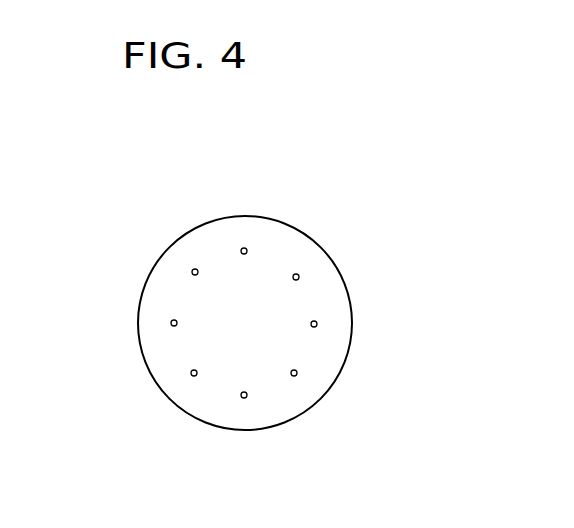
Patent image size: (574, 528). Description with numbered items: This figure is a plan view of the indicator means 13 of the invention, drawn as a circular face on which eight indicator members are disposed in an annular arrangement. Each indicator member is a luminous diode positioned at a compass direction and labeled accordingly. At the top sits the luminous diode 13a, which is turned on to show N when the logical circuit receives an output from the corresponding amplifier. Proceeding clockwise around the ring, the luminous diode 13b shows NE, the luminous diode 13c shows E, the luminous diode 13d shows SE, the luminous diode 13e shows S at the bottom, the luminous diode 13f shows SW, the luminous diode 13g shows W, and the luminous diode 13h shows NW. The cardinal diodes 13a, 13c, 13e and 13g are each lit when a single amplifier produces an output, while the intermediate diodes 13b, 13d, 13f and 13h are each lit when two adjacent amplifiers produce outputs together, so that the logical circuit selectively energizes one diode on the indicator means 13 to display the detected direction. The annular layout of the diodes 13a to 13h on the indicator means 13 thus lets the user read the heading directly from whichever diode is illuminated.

The indicator means 13 is at (177, 297).
The luminous diode 13a is at (247, 251).
The luminous diode 13b is at (299, 276).
The luminous diode 13c is at (316, 321).
The luminous diode 13d is at (297, 371).
The luminous diode 13e is at (246, 397).
The luminous diode 13f is at (191, 372).
The luminous diode 13g is at (172, 325).
The luminous diode 13h is at (192, 273).